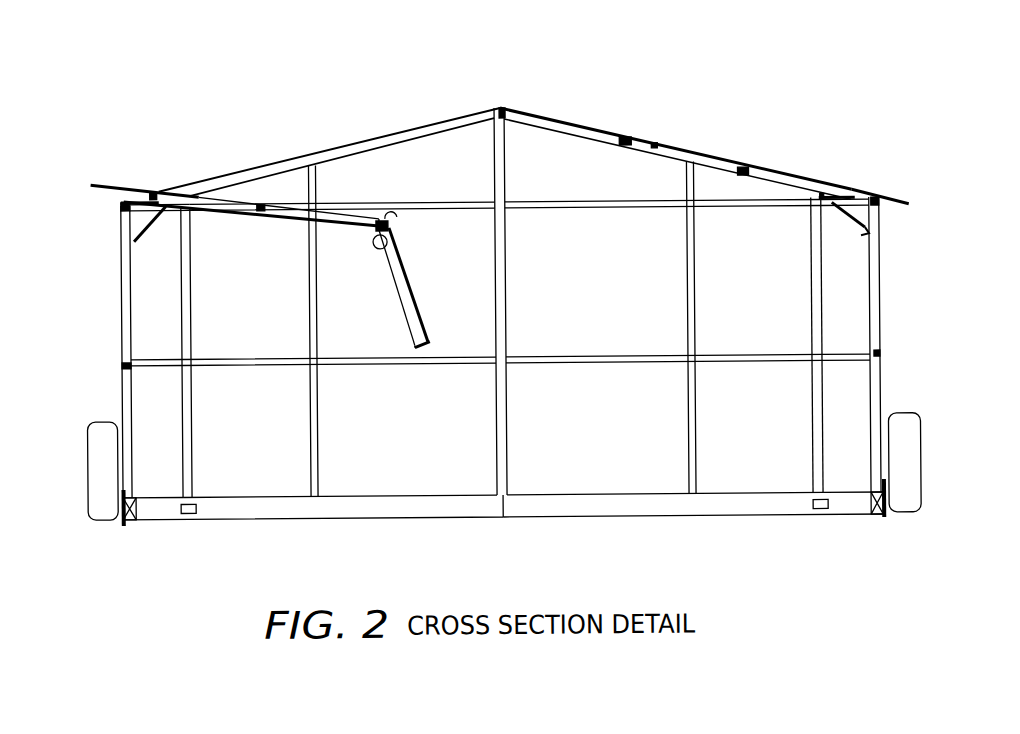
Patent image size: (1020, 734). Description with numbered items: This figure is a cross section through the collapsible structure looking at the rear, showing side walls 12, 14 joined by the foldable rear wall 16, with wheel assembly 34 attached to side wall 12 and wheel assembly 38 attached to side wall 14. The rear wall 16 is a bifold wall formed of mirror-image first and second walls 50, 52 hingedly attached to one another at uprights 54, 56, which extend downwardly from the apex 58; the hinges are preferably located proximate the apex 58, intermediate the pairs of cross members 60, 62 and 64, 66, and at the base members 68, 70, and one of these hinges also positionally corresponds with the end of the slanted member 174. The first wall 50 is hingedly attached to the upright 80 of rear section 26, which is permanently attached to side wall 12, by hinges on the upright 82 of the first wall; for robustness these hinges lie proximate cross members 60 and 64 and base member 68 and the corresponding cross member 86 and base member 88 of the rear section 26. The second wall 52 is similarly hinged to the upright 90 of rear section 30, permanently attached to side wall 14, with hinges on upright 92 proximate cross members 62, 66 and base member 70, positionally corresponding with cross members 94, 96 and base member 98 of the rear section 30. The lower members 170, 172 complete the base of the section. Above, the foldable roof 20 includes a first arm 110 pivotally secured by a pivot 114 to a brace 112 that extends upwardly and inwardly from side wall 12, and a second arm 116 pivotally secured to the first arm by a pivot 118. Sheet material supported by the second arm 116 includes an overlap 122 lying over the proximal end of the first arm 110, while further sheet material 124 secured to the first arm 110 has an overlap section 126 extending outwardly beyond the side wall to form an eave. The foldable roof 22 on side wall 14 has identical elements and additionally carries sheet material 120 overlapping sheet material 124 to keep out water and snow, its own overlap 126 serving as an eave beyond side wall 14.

The side wall 12 is at (121, 316).
The side wall 14 is at (882, 321).
The foldable rear wall 16 is at (601, 169).
The foldable roof 20 is at (343, 231).
The foldable roof 22 is at (703, 151).
The rear section 26 is at (146, 390).
The rear section 30 is at (848, 389).
The wheel assembly 34 is at (83, 500).
The wheel assembly 38 is at (927, 501).
The first wall 50 is at (437, 133).
The second wall 52 is at (540, 129).
The upright 54 is at (165, 208).
The upright 56 is at (509, 280).
The apex 58 is at (505, 104).
The cross member 60 is at (476, 202).
The cross member 62 is at (553, 188).
The cross member 64 is at (478, 357).
The cross member 66 is at (546, 356).
The base member 68 is at (476, 494).
The base member 70 is at (561, 494).
The upright 80 is at (176, 302).
The upright 82 is at (193, 268).
The cross member 86 is at (167, 365).
The base member 88 is at (166, 495).
The upright 90 is at (823, 287).
The upright 92 is at (808, 316).
The cross member 94 is at (836, 208).
The cross member 96 is at (840, 364).
The base member 98 is at (840, 494).
The first arm 110 is at (249, 216).
The brace 112 is at (137, 220).
The pivot 114 is at (160, 190).
The second arm 116 is at (402, 309).
The pivot 118 is at (396, 249).
The sheet material 120 is at (411, 287).
The overlap 122 is at (392, 211).
The sheet material 124 is at (240, 197).
The overlap section 126 is at (107, 181).
The left floor beam 170 is at (338, 519).
The right floor beam 172 is at (631, 519).
The slanted member 174 is at (385, 146).